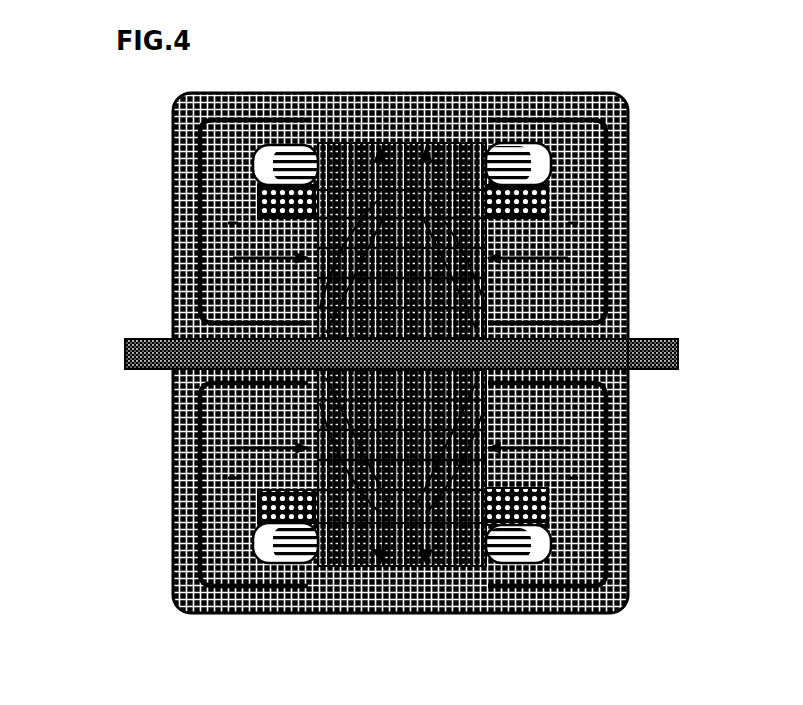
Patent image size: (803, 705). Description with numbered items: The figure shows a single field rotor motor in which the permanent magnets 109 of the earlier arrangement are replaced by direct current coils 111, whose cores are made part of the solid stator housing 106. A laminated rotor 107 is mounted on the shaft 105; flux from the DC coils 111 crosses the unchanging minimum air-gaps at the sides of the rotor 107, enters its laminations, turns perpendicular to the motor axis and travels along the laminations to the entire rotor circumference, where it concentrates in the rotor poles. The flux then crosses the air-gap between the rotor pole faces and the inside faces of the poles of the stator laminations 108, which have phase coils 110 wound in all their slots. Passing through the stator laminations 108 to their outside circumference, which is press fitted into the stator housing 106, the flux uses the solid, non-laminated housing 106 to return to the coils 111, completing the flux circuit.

The shaft 105 is at (117, 347).
The stator housing 106 is at (610, 92).
The rotor 107 is at (402, 356).
The stator laminations 108 is at (402, 160).
The permanent magnet 109 is at (685, 334).
The phase coils 110 is at (292, 150).
The DC coils 111 is at (196, 121).